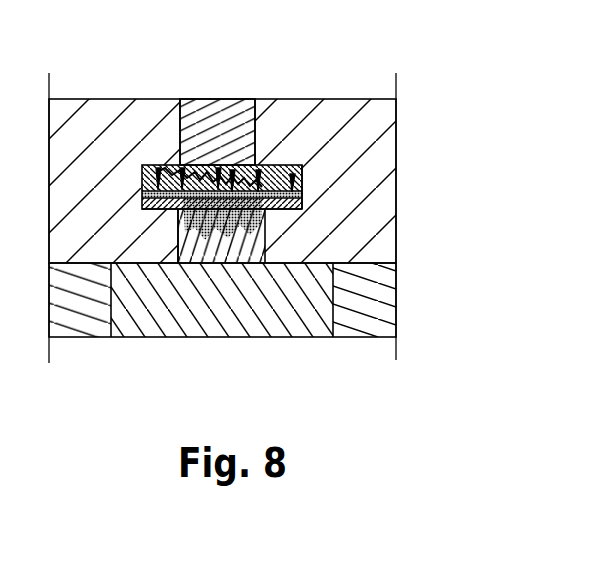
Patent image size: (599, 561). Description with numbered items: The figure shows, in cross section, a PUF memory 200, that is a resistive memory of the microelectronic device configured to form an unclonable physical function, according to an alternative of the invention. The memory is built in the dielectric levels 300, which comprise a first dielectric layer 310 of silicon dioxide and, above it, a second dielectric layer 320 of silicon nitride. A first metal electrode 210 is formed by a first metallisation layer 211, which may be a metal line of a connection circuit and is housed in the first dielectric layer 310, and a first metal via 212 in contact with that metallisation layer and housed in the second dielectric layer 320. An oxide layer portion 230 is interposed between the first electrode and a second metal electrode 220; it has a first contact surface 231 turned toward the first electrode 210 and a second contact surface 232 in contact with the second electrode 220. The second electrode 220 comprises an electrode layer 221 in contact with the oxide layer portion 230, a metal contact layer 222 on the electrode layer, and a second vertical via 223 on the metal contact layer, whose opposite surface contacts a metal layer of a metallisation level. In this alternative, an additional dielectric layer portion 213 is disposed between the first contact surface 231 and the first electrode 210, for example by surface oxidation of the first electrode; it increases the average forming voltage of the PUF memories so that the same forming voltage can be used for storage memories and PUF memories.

The PUF memory 200 is at (425, 88).
The first metal electrode 210 is at (180, 325).
The first metallisation layer 211 is at (212, 285).
The first metal via 212 is at (236, 252).
The additional dielectric layer portion 213 is at (177, 222).
The second metal electrode 220 is at (197, 98).
The electrode layer 221 is at (270, 50).
The metal contact layer 222 is at (207, 172).
The second vertical via 223 is at (228, 130).
The oxide layer portion 230 is at (141, 202).
The first contact surface 231 is at (150, 225).
The second contact surface 232 is at (290, 165).
The second body 300 is at (282, 218).
The first dielectric layer 310 is at (250, 300).
The second dielectric layer 320 is at (357, 198).